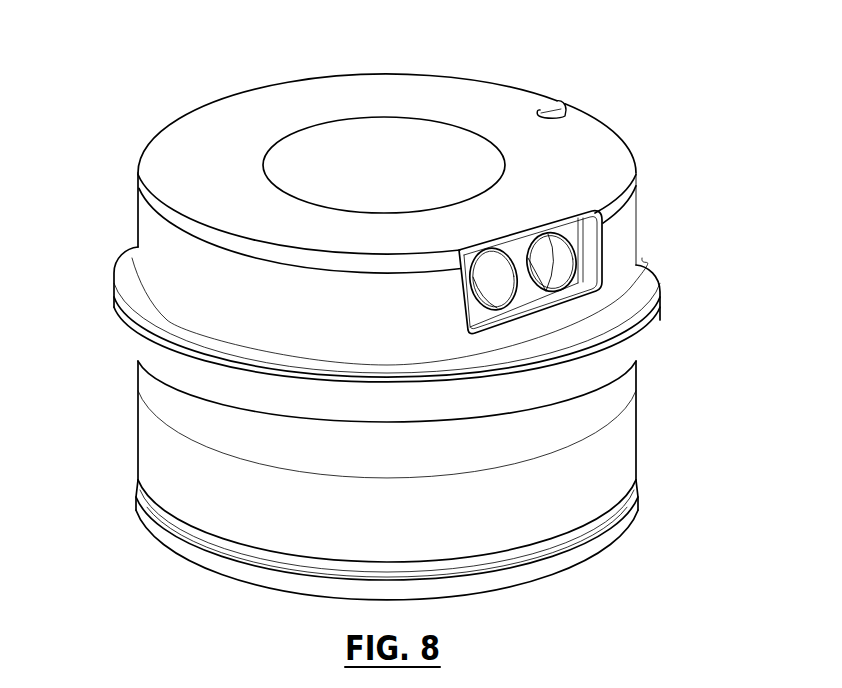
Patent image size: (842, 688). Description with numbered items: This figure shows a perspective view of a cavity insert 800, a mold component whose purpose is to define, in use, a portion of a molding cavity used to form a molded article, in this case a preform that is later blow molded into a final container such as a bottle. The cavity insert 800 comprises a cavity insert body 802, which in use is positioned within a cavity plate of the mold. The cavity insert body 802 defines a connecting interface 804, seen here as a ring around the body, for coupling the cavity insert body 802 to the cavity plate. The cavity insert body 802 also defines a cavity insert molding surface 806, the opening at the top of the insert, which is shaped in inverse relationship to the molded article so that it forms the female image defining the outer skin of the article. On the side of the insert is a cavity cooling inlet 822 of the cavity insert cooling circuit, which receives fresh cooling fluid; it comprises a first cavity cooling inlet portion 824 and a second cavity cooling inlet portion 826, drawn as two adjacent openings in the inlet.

The cavity insert 800 is at (592, 84).
The cavity insert body 802 is at (632, 423).
The connecting interface 804 is at (137, 361).
The cavity insert molding surface 806 is at (488, 167).
The cavity cooling inlet 822 is at (524, 226).
The first cavity cooling inlet portion 824 is at (507, 293).
The second cavity cooling inlet portion 826 is at (572, 262).